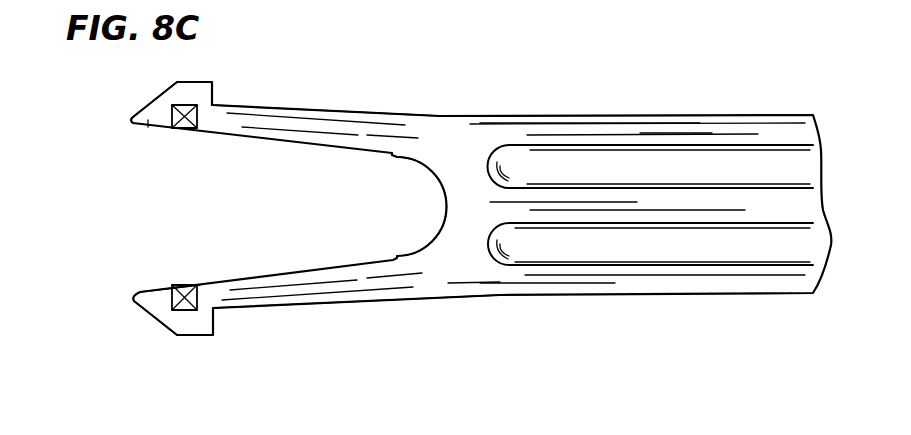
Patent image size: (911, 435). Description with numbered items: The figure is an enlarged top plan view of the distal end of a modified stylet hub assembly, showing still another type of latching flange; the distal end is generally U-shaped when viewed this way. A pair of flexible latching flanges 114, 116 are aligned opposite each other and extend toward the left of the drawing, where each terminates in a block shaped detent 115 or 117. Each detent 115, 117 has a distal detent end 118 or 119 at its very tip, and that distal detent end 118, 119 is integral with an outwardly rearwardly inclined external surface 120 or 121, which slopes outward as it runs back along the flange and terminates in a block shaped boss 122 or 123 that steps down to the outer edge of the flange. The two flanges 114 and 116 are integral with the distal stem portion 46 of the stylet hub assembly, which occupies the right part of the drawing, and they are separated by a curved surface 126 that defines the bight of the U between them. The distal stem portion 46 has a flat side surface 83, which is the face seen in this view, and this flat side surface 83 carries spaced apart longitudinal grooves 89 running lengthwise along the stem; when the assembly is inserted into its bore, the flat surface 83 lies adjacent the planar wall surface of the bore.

The distal stem portion 46 is at (625, 132).
The flat side surface 83 is at (780, 214).
The longitudinal grooves 89 is at (787, 168).
The flexible latching flange 114 is at (260, 118).
The flexible latching flange 116 is at (297, 298).
The block shaped detent 115 is at (148, 127).
The block shaped detent 117 is at (145, 292).
The distal detent end 118 is at (133, 121).
The distal detent end 119 is at (133, 298).
The outwardly rearwardly inclined external surface 120 is at (155, 100).
The outwardly rearwardly inclined external surface 121 is at (152, 317).
The block shaped boss 122 is at (190, 87).
The block shaped boss 123 is at (195, 323).
The curved surface 126 is at (442, 200).